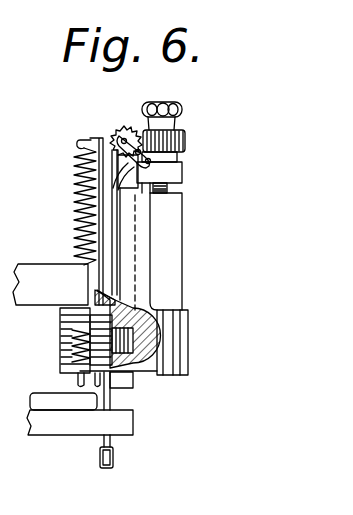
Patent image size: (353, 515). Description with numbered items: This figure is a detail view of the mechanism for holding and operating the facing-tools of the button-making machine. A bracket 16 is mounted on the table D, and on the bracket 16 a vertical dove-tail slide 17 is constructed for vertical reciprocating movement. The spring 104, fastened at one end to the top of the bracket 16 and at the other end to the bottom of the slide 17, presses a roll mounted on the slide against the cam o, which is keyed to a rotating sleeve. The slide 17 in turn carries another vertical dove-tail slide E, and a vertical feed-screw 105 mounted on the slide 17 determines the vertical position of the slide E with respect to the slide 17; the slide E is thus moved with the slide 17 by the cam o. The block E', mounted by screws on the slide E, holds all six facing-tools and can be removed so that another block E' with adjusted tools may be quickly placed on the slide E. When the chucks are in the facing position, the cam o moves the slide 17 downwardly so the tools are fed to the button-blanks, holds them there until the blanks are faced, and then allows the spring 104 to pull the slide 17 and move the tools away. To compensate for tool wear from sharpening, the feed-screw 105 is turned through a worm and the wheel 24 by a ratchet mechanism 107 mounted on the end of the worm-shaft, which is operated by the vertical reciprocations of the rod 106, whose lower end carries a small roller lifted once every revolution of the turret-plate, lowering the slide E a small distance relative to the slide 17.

The ratchet mechanism 107 is at (123, 123).
The wheel 24 is at (186, 133).
The feed-screw 105 is at (170, 188).
The slide E is at (124, 221).
The block E' is at (165, 335).
The spring 104 is at (78, 176).
The cam o is at (35, 222).
The slide 17 is at (132, 377).
The bracket 16 is at (45, 395).
The table D is at (125, 428).
The rod 106 is at (106, 400).